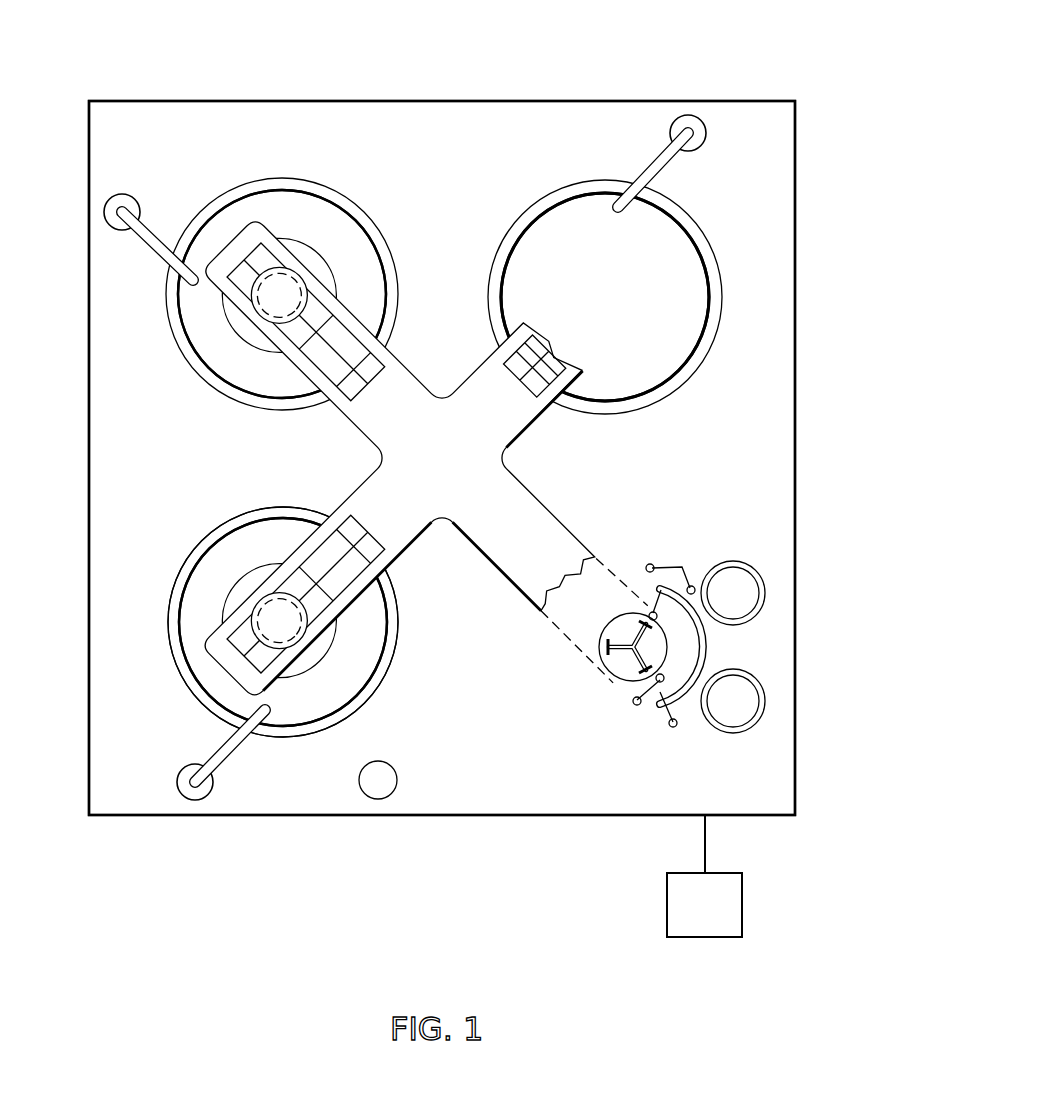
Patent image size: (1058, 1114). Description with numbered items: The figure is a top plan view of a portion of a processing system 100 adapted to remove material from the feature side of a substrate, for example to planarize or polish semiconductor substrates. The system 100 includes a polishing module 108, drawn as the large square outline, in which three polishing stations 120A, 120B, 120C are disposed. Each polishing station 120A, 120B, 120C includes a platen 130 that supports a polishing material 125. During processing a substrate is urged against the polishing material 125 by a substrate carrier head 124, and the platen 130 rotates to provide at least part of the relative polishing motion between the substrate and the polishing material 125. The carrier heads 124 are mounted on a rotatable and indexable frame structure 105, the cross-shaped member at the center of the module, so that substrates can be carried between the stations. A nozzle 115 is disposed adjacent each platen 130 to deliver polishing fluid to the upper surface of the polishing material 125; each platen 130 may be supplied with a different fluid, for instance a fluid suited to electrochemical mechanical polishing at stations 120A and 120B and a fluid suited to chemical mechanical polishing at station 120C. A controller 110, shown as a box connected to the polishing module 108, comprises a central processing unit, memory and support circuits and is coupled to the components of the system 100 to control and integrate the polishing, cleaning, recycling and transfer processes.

The processing system 100 is at (122, 64).
The frame structure 105 is at (461, 470).
The polishing module 108 is at (88, 452).
The controller 110 is at (728, 915).
The nozzle 115 is at (645, 156).
The polishing station 120A is at (515, 193).
The polishing station 120B is at (215, 474).
The polishing station 120C is at (386, 733).
The substrate carrier head 124 is at (323, 256).
The polishing material 125 is at (632, 378).
The platen 130 is at (400, 627).